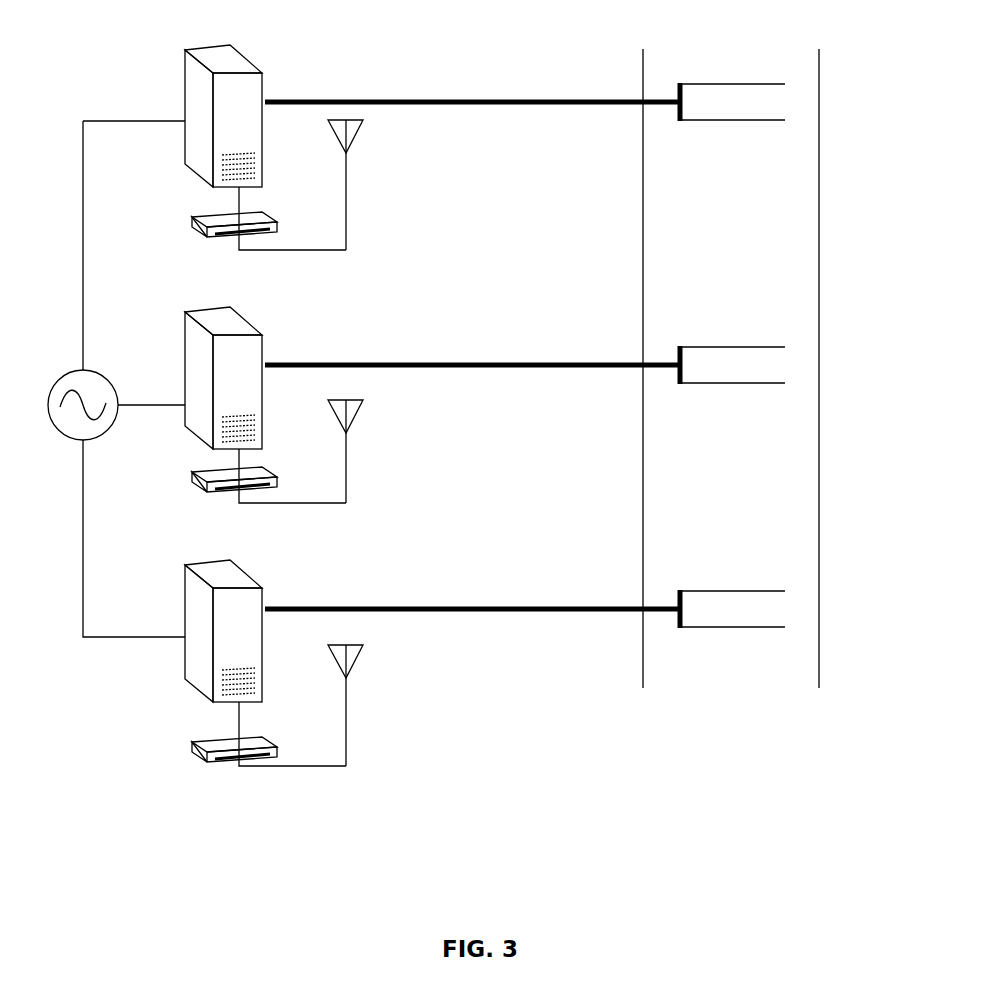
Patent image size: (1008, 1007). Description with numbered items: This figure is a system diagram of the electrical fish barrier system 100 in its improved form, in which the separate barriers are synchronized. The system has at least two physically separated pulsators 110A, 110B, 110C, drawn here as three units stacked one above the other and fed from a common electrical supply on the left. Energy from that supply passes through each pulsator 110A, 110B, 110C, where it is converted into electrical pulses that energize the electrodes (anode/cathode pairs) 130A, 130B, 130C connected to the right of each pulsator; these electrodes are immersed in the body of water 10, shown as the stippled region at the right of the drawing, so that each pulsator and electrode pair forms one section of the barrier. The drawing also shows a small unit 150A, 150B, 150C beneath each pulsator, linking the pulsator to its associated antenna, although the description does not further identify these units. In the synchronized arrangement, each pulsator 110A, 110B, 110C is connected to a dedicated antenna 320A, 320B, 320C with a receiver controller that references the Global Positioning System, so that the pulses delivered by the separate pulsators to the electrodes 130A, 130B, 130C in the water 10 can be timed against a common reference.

The electrical fish barrier system 100 is at (263, 47).
The body of water 10 is at (797, 138).
The pulsator 110A is at (257, 65).
The pulsator 110B is at (257, 327).
The pulsator 110C is at (257, 580).
The network switch 150A is at (276, 228).
The network switch 150B is at (262, 492).
The network switch 150C is at (276, 742).
The dedicated antenna 320A is at (361, 148).
The dedicated antenna 320B is at (361, 421).
The dedicated antenna 320C is at (361, 672).
The electrodes (anode/cathode pair) 130A is at (775, 82).
The electrodes (anode/cathode pair) 130B is at (773, 360).
The electrodes (anode/cathode pair) 130C is at (773, 610).